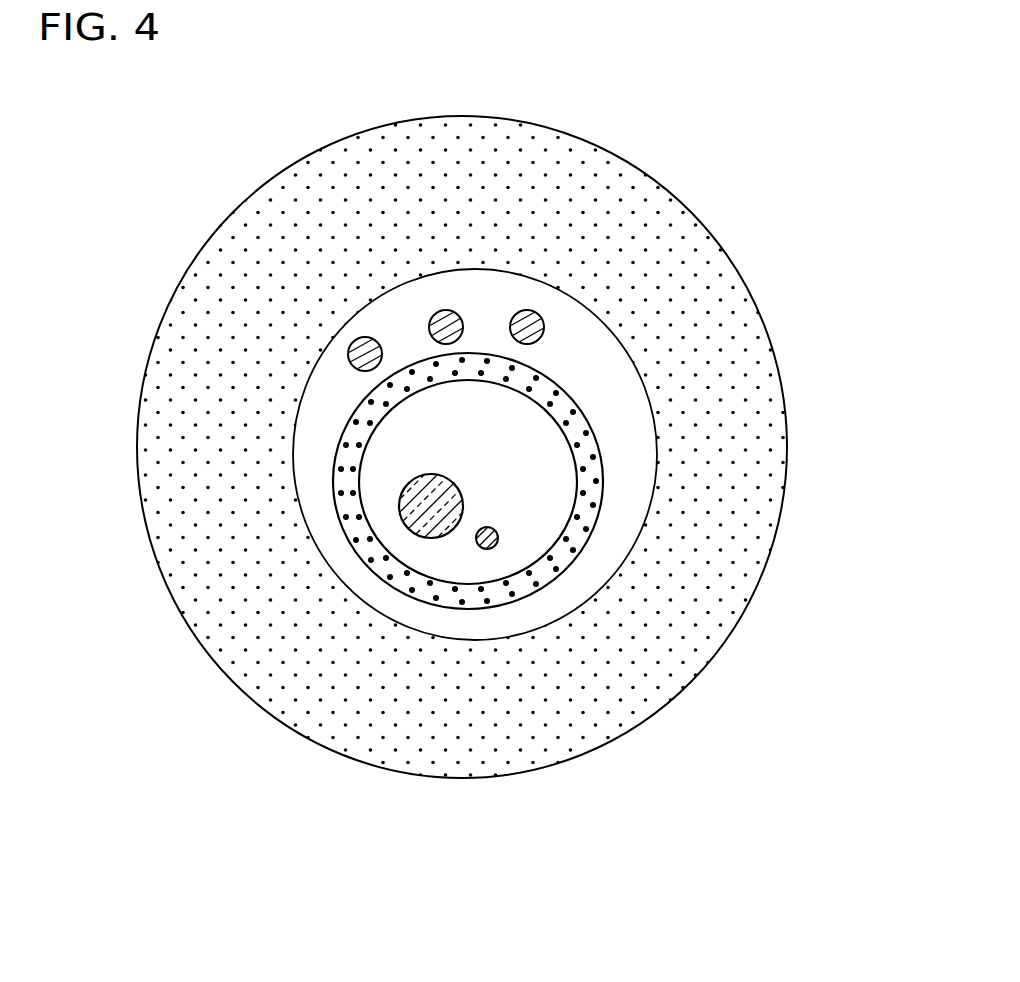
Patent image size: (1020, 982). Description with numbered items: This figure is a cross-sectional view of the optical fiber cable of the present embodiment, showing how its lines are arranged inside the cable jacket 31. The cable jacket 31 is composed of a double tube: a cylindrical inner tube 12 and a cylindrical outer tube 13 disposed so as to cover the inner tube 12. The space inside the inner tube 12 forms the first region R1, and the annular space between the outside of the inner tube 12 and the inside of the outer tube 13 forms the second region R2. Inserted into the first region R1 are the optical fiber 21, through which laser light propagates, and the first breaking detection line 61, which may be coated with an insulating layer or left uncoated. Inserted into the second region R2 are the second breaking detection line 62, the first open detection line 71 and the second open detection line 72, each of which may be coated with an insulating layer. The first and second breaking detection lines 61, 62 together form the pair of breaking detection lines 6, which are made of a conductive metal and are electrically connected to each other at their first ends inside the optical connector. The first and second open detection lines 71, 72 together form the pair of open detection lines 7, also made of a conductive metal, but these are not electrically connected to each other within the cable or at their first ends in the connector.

The cable jacket 31 is at (528, 447).
The inner tube 12 is at (583, 420).
The outer tube 13 is at (775, 512).
The optical fiber 21 is at (410, 538).
The pair of breaking detection lines 6 is at (421, 451).
The first breaking detection line 61 is at (485, 549).
The second breaking detection line 62 is at (366, 337).
The pair of open detection lines 7 is at (480, 197).
The first open detection line 71 is at (442, 310).
The second open detection line 72 is at (526, 310).
The first region R1 is at (553, 519).
The second region R2 is at (584, 369).